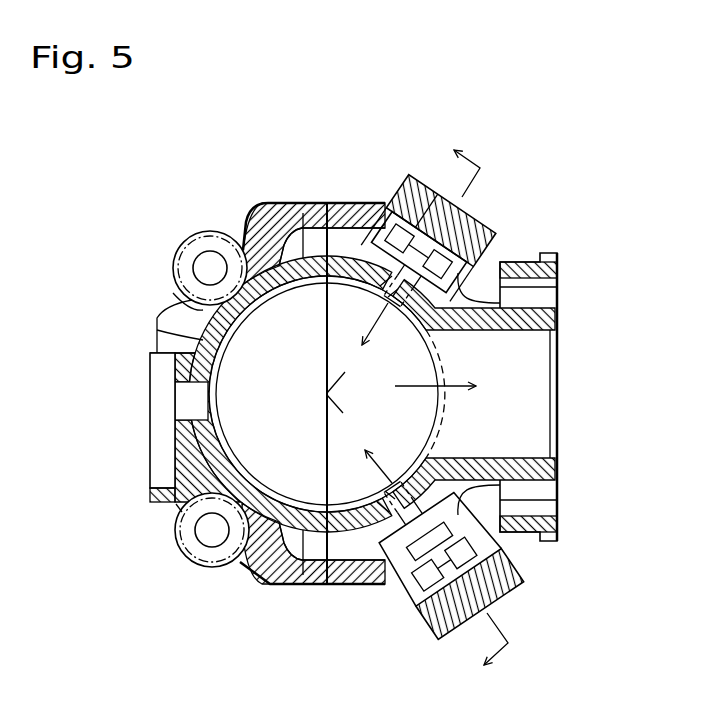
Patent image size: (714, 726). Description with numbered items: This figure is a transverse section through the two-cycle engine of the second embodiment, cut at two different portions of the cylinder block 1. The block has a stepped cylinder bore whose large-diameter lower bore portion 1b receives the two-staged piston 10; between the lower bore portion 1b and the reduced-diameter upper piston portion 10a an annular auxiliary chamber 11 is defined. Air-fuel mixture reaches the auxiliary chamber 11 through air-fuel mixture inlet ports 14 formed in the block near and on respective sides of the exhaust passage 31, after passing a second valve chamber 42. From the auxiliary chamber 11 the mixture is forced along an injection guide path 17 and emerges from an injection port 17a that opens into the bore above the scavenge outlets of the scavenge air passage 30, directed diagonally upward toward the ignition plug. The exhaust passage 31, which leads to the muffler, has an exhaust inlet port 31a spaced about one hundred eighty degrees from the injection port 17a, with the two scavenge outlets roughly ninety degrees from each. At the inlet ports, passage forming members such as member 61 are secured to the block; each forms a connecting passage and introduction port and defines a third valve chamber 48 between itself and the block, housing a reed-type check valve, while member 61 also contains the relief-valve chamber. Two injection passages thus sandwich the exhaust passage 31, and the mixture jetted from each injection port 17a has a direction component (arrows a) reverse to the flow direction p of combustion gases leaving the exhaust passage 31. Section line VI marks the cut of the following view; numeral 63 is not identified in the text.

The cylinder block 1 is at (266, 238).
The lower bore portion 1b is at (180, 437).
The piston 10 is at (172, 308).
The upper piston portion 10a is at (250, 349).
The annular auxiliary chamber 11 is at (200, 342).
The air-fuel mixture inlet port 14 is at (190, 403).
The injection guide path 17 is at (384, 272).
The injection port 17a is at (391, 300).
The scavenge air passage 30 is at (300, 607).
The exhaust passage 31 is at (520, 383).
The exhaust inlet port 31a is at (392, 386).
The second valve chamber 42 is at (160, 477).
The third valve chamber 48 is at (450, 285).
The passage forming member 61 is at (463, 548).
The upper valve 63 is at (461, 251).
The flow direction a is at (353, 480).
The direction of flow of combustion gases p is at (420, 386).
The section line VI- VI is at (471, 405).